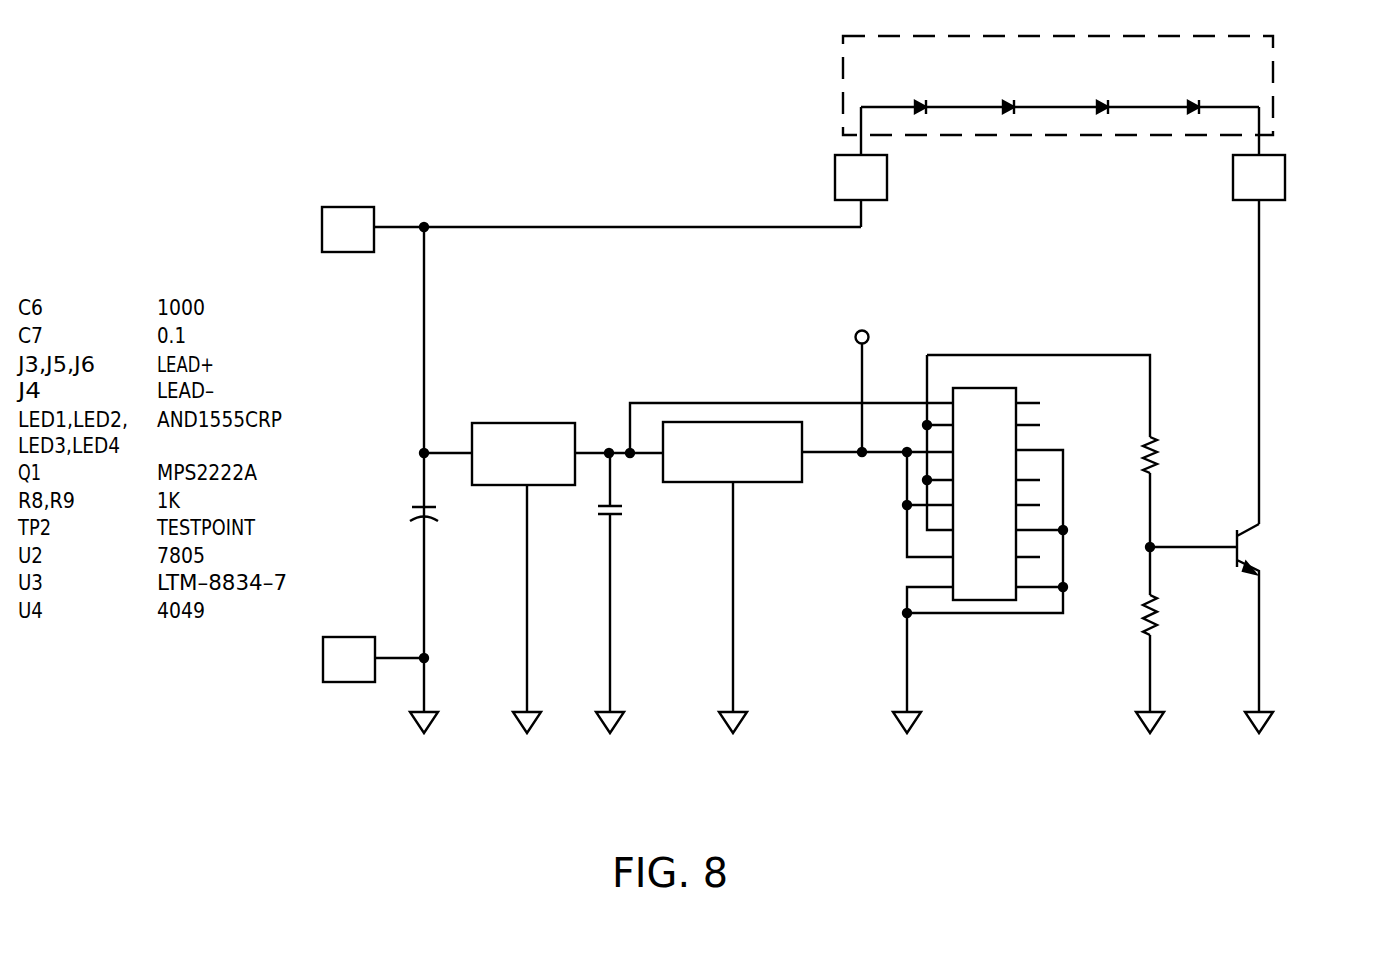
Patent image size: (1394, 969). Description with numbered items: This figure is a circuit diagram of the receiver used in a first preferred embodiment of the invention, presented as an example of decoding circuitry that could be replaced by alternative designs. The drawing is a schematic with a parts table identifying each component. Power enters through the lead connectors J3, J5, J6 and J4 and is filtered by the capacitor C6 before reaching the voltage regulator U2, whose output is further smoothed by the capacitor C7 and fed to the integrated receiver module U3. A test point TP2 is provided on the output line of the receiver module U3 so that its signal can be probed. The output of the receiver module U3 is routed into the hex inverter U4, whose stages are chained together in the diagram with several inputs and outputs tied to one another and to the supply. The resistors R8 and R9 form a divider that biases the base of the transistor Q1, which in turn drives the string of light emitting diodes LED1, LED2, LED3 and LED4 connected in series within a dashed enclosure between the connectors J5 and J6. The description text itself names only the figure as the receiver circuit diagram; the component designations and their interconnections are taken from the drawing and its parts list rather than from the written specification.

The capacitor C6 1000 C6 is at (397, 524).
The capacitor C7 0.1 C7 is at (630, 521).
The connector J3 LEAD+ J3 is at (348, 217).
The connector J4 LEAD- J4 is at (373, 647).
The connector J5 LEAD+ J5 is at (843, 177).
The connector J6 LEAD+ J6 is at (1280, 177).
The LED1 AND1555CRP LED1 is at (915, 84).
The LED2 AND1555CRP LED2 is at (1014, 84).
The LED3 AND1555CRP LED3 is at (1106, 84).
The LED4 AND1555CRP LED4 is at (1205, 84).
The transistor Q1 MPS2222A Q1 is at (1304, 616).
The resistor R8 1K R8 is at (1169, 458).
The resistor R9 1K R9 is at (1169, 615).
The test point TP2 is at (852, 372).
The voltage regulator U2 7805 U2 is at (523, 438).
The U3 LTM-8834-7 U3 is at (764, 471).
The hex inverter U4 4049 U4 is at (980, 495).